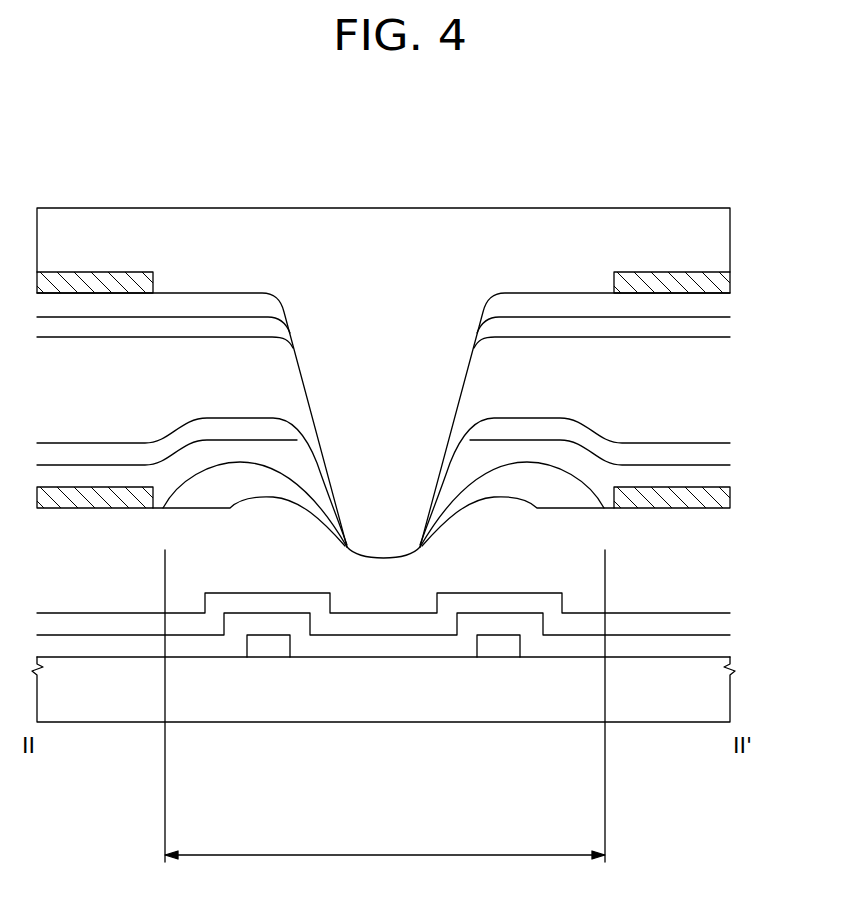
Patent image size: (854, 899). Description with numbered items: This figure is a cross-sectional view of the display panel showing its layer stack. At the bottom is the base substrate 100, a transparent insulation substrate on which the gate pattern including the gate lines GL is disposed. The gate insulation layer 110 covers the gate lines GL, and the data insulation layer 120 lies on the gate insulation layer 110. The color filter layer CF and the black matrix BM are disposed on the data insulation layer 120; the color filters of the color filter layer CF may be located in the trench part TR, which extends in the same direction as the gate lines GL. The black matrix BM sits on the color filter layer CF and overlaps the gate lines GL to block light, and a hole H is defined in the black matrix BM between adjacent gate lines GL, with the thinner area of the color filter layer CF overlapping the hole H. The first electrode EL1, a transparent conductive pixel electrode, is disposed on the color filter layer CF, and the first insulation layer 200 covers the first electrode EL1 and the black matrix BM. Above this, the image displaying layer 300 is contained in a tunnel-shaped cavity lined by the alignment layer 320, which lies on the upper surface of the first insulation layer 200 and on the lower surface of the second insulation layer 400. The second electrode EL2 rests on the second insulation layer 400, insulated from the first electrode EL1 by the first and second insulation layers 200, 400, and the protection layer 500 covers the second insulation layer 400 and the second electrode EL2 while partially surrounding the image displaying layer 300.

The protection layer 500 is at (722, 248).
The second electrode EL2 is at (722, 282).
The second insulation layer 400 is at (722, 305).
The alignment layer 320 is at (722, 328).
The image displaying layer 300 is at (722, 390).
The first insulation layer 200 is at (722, 475).
The first electrode EL1 is at (722, 498).
The black matrix BM is at (210, 492).
The hole H is at (377, 538).
The color filter layer CF is at (722, 587).
The data insulation layer 120 is at (722, 623).
The gate insulation layer 110 is at (722, 648).
The gate line GL is at (270, 650).
The base substrate 100 is at (722, 695).
The trench part TR is at (385, 706).